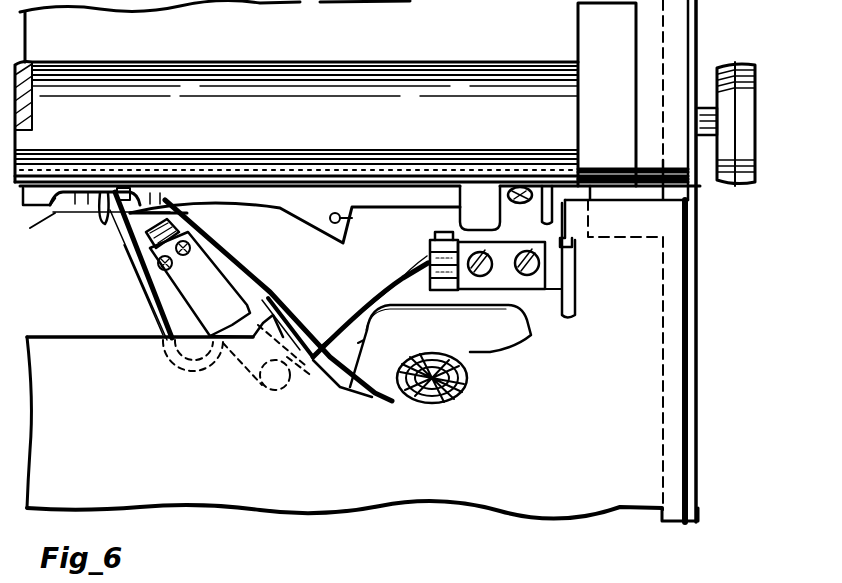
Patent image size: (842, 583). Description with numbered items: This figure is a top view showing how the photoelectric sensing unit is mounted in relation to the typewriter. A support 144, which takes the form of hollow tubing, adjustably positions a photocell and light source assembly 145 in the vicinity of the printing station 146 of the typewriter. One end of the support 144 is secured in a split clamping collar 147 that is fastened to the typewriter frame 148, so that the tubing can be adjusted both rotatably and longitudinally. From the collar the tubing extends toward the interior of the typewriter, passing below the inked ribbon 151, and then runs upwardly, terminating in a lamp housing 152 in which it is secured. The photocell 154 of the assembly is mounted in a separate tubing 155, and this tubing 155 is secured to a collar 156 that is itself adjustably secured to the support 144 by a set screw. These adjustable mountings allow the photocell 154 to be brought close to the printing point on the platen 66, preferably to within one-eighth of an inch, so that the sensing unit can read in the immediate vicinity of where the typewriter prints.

The platen 66 is at (128, 108).
The printing station 146 is at (122, 183).
The photocell 154 is at (126, 230).
The tubing 155 is at (143, 268).
The photocell and light source assembly 145 is at (143, 303).
The inked ribbon 151 is at (230, 252).
The lamp housing 152 is at (281, 293).
The support 144 is at (365, 297).
The split clamping collar 147 is at (427, 250).
The typewriter frame 148 is at (540, 293).
The collar 156 is at (237, 357).